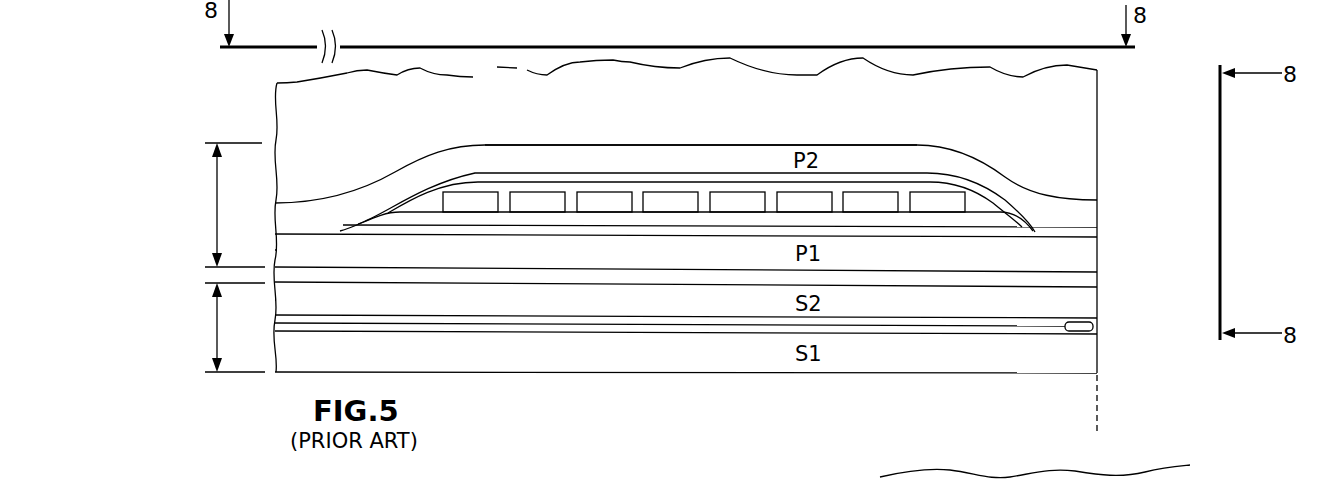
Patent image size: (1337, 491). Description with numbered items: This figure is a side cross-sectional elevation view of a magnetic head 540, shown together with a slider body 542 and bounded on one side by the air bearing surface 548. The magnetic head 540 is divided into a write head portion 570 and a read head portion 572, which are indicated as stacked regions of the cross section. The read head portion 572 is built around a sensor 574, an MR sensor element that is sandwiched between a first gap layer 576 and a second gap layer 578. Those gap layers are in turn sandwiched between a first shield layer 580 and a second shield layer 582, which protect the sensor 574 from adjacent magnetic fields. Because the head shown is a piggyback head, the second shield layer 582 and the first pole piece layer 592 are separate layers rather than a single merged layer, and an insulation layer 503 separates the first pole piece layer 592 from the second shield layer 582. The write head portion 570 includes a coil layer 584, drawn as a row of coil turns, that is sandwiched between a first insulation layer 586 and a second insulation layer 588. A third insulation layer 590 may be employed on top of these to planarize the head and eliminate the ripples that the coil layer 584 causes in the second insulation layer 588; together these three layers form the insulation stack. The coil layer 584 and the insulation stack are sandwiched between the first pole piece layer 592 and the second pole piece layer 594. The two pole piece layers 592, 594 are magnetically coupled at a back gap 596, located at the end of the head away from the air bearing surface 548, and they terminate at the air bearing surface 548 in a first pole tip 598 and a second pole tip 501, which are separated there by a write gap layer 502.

The magnetic head 540 is at (255, 95).
The slider body 542 is at (1085, 100).
The air bearing surface (ABS) 548 is at (1097, 425).
The write head portion 570 is at (210, 211).
The read head portion 572 is at (210, 327).
The sensor 574 is at (1095, 328).
The first gap layer 576 is at (753, 333).
The second gap layer 578 is at (719, 318).
The first shield layer 580 is at (882, 357).
The second shield layer 582 is at (948, 305).
The coil layer 584 is at (733, 202).
The first insulation layer 586 is at (640, 220).
The second insulation layer 588 is at (983, 203).
The third insulation layer 590 is at (513, 175).
The first pole piece layer 592 is at (1012, 262).
The second pole piece layer 594 is at (877, 160).
The back gap 596 is at (305, 200).
The first pole tip 598 is at (1097, 270).
The second pole tip 501 is at (1085, 210).
The write gap layer 502 is at (1097, 237).
The insulation layer 503 is at (567, 280).